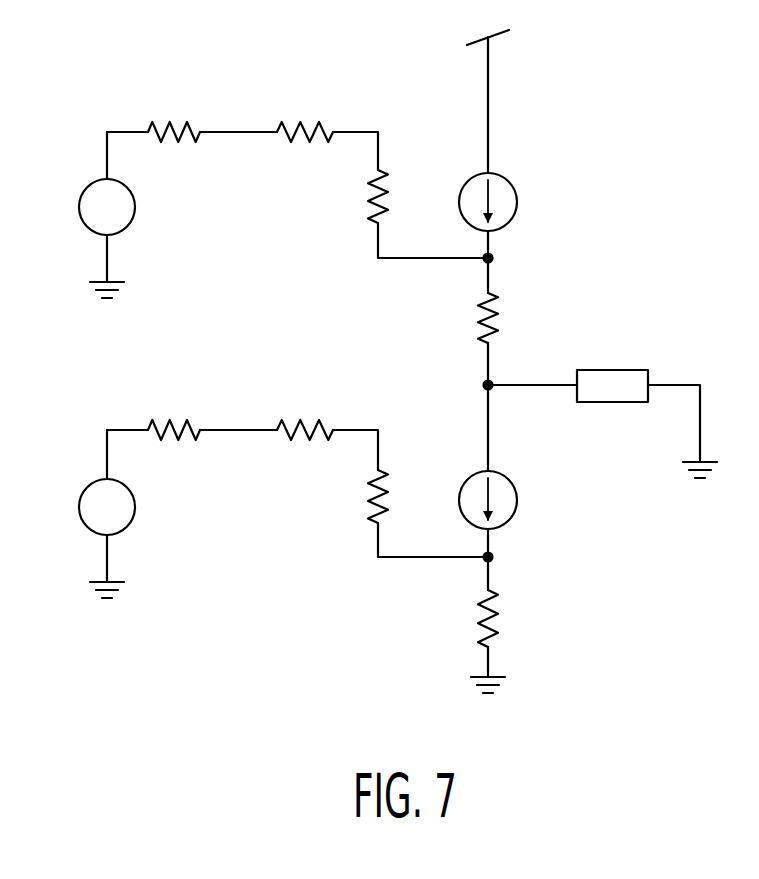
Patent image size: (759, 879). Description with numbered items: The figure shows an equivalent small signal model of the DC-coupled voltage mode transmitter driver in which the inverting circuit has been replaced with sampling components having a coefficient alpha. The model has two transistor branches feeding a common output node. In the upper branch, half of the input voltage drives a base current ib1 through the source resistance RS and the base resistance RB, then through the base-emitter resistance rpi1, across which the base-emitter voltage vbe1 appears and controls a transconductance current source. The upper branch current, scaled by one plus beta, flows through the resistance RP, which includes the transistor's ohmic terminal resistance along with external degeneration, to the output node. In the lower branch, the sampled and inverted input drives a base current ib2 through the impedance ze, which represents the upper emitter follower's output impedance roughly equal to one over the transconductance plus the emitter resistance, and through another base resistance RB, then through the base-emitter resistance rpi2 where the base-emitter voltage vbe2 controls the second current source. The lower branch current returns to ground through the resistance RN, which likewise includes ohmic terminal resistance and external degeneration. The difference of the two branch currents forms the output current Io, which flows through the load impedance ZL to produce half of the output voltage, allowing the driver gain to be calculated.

The source resistance RS is at (192, 114).
The base resistance RB is at (327, 277).
The first base current ib1 is at (282, 62).
The first base-emitter voltage vbe1 is at (355, 233).
The first base-emitter resistance rpi1 is at (459, 159).
The P-side resistance RP is at (505, 321).
The load impedance ZL is at (602, 424).
The output current Io is at (705, 350).
The emitter follower output impedance ze is at (192, 415).
The second base current ib2 is at (282, 360).
The second base-emitter voltage vbe2 is at (355, 467).
The second base-emitter resistance rpi2 is at (459, 464).
The N-side resistance RN is at (503, 625).